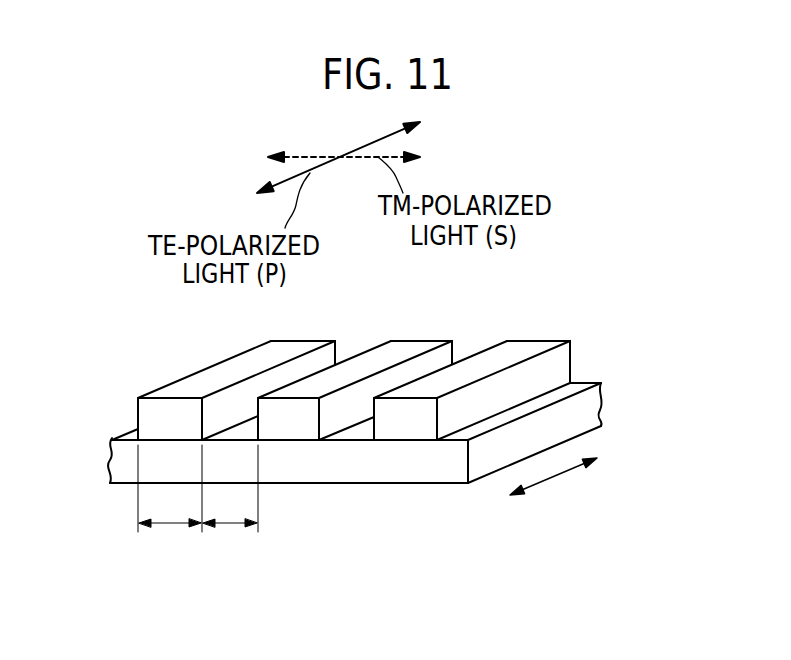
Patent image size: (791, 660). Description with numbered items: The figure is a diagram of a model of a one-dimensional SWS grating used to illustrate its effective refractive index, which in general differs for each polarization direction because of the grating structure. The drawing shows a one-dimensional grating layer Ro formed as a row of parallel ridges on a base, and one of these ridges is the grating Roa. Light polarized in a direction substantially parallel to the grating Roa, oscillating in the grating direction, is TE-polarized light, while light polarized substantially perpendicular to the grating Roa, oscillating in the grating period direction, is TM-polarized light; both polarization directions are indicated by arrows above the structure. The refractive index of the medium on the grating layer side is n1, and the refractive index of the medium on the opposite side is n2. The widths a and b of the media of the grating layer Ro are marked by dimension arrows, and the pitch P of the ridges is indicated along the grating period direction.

The one-dimensional grating layer Ro is at (514, 361).
The grating Roa is at (562, 365).
The refractive index of the medium on the grating layer side n1 is at (334, 453).
The refractive index of the medium on the opposite side n2 is at (259, 390).
The width of the medium of the grating layer a is at (170, 488).
The width of the medium of the grating layer b is at (230, 488).
The grating pitch P is at (553, 482).